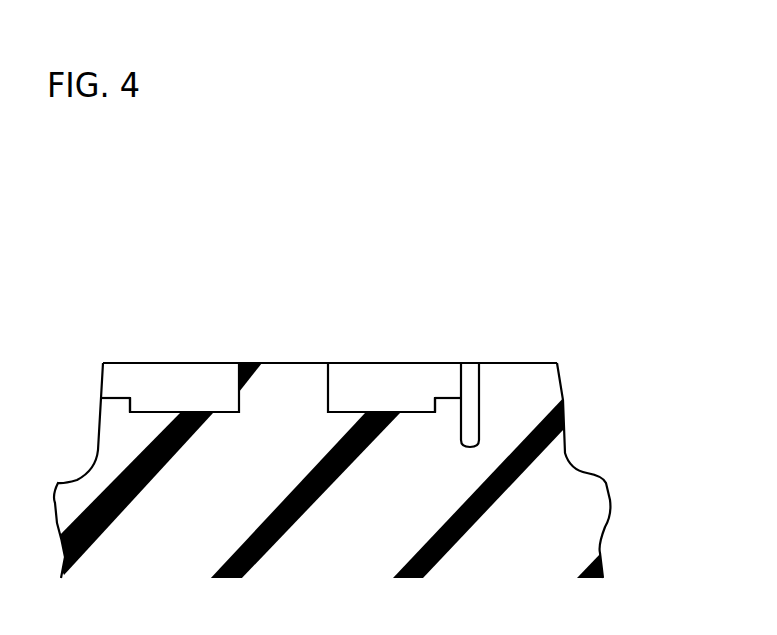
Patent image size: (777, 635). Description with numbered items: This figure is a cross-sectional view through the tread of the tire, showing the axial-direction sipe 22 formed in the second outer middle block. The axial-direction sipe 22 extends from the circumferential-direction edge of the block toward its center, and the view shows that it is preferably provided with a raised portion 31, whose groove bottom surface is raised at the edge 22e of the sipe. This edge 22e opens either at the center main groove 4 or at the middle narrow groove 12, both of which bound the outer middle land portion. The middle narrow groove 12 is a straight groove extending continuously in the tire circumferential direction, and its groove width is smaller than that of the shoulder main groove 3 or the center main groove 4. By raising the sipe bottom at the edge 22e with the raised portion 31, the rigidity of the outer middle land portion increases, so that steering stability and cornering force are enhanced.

The shoulder main groove 3 is at (590, 390).
The center main groove 4 is at (67, 398).
The middle narrow groove 12 is at (469, 385).
The axial-direction sipe 22 is at (190, 385).
The edge 22e is at (128, 377).
The raised portion 31 is at (117, 395).